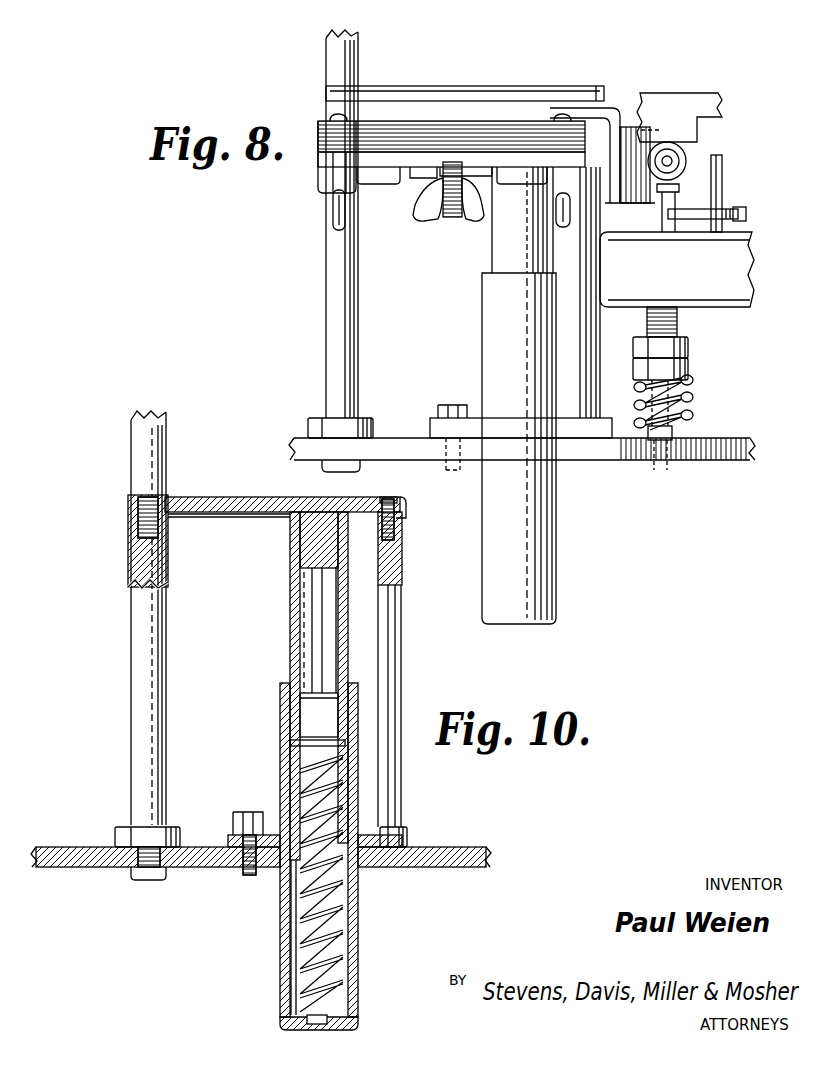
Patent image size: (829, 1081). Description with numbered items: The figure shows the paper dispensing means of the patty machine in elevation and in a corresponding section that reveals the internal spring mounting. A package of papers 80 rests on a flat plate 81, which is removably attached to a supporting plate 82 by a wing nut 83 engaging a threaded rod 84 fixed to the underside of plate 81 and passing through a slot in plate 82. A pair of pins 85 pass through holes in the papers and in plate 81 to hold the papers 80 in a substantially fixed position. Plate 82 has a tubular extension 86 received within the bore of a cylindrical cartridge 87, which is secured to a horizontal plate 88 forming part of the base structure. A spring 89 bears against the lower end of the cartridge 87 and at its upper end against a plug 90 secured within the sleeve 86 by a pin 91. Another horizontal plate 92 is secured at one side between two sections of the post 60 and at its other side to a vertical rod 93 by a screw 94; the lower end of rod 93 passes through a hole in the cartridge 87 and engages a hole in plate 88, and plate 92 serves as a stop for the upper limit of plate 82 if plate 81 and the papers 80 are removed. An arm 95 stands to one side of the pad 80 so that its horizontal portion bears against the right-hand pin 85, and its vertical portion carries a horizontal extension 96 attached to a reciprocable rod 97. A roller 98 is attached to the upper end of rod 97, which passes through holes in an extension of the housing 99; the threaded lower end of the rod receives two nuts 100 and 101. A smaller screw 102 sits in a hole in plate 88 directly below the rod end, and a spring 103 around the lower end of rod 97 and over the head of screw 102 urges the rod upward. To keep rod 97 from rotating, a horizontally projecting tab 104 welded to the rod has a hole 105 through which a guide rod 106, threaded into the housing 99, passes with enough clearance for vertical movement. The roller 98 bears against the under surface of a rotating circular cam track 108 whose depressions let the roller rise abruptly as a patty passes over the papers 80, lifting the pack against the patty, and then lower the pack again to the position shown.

In FIG. 8, the post 60 is at (330, 50).
In FIG. 10, the post 60 is at (135, 445).
In FIG. 8, the package of papers 80 is at (433, 124).
In FIG. 8, the flat plate 81 is at (317, 153).
In FIG. 8, the supporting plate 82 is at (379, 171).
In FIG. 10, the supporting plate 82 is at (240, 518).
In FIG. 8, the wing nut 83 is at (426, 220).
In FIG. 8, the threaded rod 84 is at (453, 216).
In FIG. 8, the pins 85 is at (332, 117).
In FIG. 8, the tubular extension 86 is at (491, 251).
In FIG. 10, the tubular extension 86 is at (290, 628).
In FIG. 8, the cylindrical cartridge 87 is at (557, 554).
In FIG. 10, the cylindrical cartridge 87 is at (359, 917).
In FIG. 8, the horizontal plate 88 is at (636, 462).
In FIG. 10, the horizontal plate 88 is at (219, 868).
In FIG. 10, the spring 89 is at (290, 928).
In FIG. 10, the plug 90 is at (300, 728).
In FIG. 10, the pin 91 is at (290, 744).
In FIG. 8, the horizontal plate 92 is at (461, 90).
In FIG. 10, the horizontal plate 92 is at (216, 488).
In FIG. 8, the vertical rod 93 is at (592, 342).
In FIG. 10, the vertical rod 93 is at (400, 614).
In FIG. 10, the screw 94 is at (392, 500).
In FIG. 8, the arm 95 is at (613, 107).
In FIG. 8, the horizontal extension 96 is at (637, 204).
In FIG. 8, the reciprocable rod 97 is at (680, 189).
In FIG. 8, the roller 98 is at (689, 158).
In FIG. 8, the housing 99 is at (712, 306).
In FIG. 8, the nut 100 is at (689, 349).
In FIG. 8, the nut 101 is at (689, 372).
In FIG. 8, the screw 102 is at (682, 433).
In FIG. 8, the spring 103 is at (690, 401).
In FIG. 8, the tab 104 is at (746, 214).
In FIG. 8, the hole 105 is at (734, 208).
In FIG. 8, the guide rod 106 is at (723, 178).
In FIG. 8, the circular cam track 108 is at (684, 96).